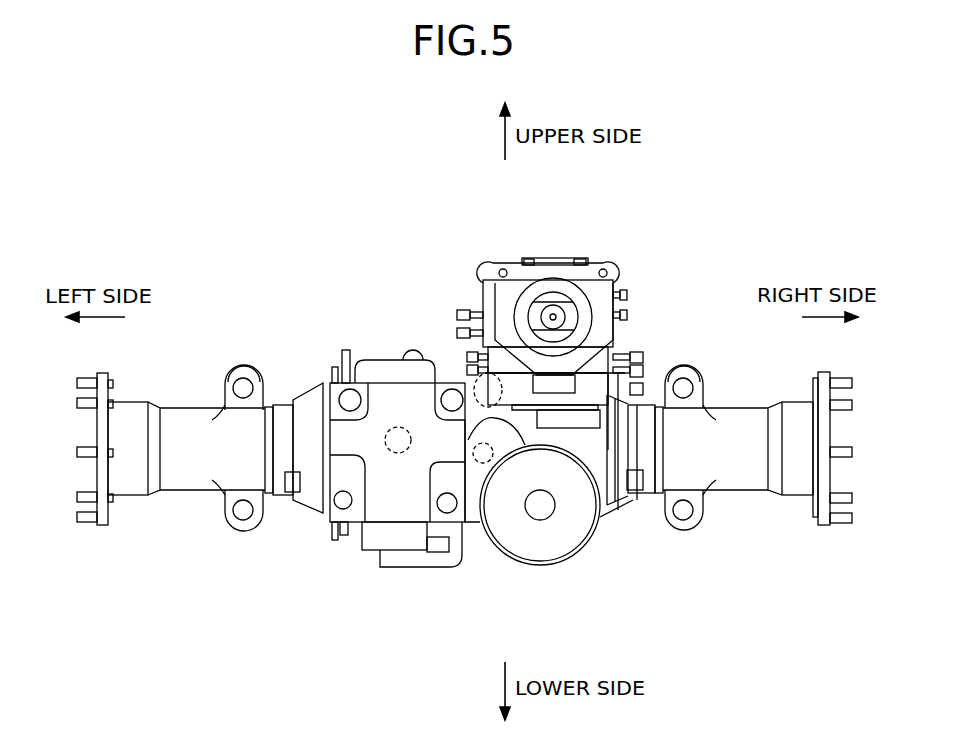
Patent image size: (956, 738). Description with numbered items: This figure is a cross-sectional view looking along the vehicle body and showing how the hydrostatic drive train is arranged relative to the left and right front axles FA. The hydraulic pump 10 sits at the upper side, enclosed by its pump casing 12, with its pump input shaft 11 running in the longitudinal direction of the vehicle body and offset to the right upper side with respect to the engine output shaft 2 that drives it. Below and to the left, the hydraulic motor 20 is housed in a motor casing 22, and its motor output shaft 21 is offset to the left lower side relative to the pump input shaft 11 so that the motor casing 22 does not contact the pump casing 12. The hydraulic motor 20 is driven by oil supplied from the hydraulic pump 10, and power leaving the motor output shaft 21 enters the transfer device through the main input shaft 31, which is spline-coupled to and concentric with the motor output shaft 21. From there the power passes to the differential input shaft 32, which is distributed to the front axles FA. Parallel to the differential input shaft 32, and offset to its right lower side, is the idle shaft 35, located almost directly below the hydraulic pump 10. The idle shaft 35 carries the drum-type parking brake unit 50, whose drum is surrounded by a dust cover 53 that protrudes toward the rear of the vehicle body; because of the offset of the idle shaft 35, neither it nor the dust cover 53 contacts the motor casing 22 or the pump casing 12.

The engine output shaft 2 is at (488, 373).
The hydraulic pump 10 is at (578, 352).
The pump input shaft 11 is at (553, 305).
The pump casing 12 is at (620, 327).
The hydraulic motor 20 is at (427, 428).
The motor output shaft 21 is at (387, 331).
The main input shaft 31 is at (398, 427).
The motor casing 22 is at (318, 485).
The differential input shaft 32 is at (483, 465).
The idle shaft 35 is at (540, 507).
The parking brake unit 50 is at (566, 544).
The dust cover 53 is at (540, 505).
The front axles FA is at (177, 418).